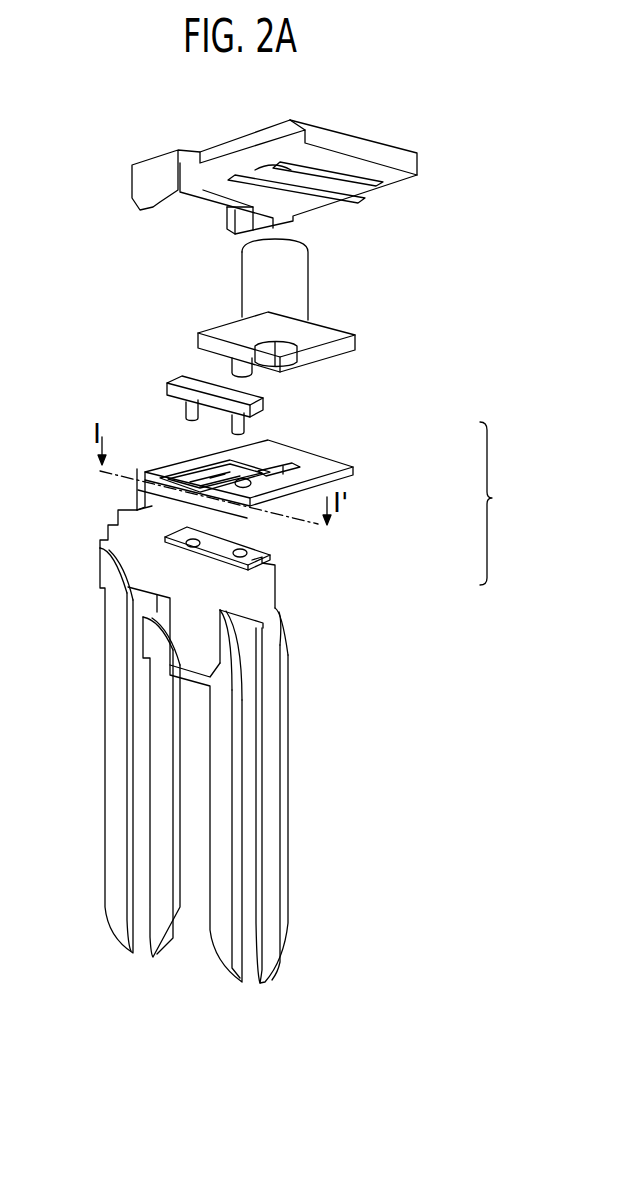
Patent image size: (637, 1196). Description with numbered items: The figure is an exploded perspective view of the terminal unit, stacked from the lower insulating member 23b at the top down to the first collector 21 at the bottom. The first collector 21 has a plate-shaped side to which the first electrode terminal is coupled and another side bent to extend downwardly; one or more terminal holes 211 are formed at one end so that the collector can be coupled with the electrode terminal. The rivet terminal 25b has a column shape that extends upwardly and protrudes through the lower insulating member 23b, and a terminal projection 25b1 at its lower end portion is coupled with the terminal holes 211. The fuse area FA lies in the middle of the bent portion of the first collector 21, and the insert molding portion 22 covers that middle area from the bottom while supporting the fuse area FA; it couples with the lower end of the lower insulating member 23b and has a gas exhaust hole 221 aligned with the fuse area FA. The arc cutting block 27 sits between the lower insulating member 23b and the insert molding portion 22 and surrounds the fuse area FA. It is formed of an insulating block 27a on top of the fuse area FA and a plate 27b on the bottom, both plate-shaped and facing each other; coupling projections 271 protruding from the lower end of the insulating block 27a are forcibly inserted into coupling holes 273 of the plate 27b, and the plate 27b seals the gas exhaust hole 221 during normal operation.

The first collector 21 is at (229, 767).
The terminal holes 211 is at (287, 477).
The insert molding portion 22 is at (136, 498).
The gas exhaust hole 221 is at (147, 509).
The lower insulating member 23b is at (131, 185).
The rivet terminal 25b is at (352, 338).
The protrusion of plunger 25b1 is at (296, 354).
The arc cutting block 27 is at (498, 503).
The insulating block 27a is at (265, 403).
The coupling projections 271 is at (178, 408).
The plate 27b is at (268, 556).
The coupling holes 273 is at (243, 555).
The fuse area FA is at (191, 508).